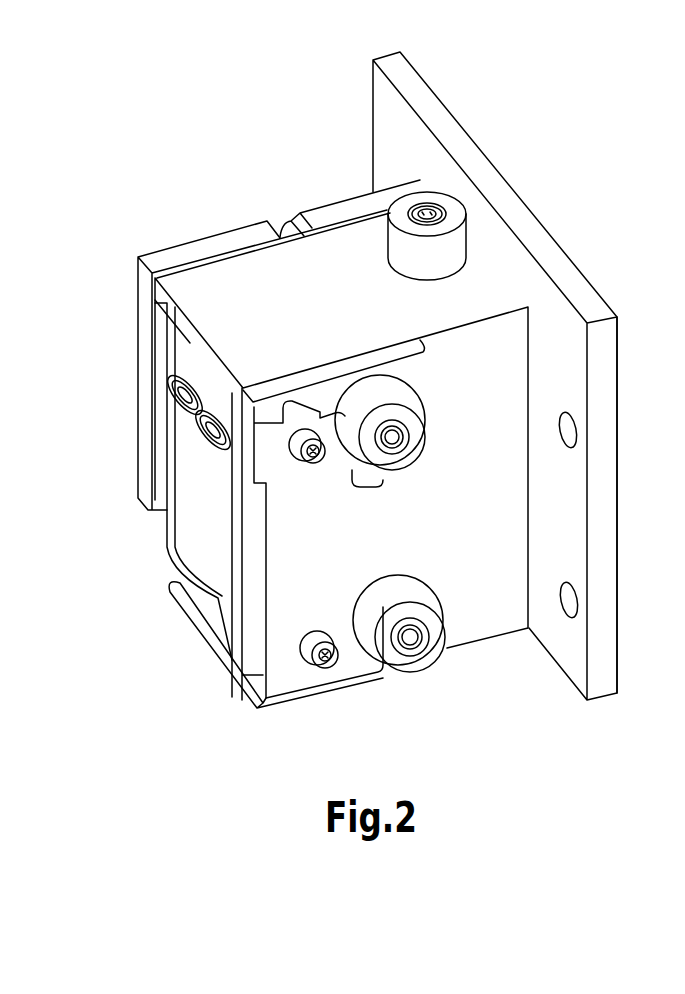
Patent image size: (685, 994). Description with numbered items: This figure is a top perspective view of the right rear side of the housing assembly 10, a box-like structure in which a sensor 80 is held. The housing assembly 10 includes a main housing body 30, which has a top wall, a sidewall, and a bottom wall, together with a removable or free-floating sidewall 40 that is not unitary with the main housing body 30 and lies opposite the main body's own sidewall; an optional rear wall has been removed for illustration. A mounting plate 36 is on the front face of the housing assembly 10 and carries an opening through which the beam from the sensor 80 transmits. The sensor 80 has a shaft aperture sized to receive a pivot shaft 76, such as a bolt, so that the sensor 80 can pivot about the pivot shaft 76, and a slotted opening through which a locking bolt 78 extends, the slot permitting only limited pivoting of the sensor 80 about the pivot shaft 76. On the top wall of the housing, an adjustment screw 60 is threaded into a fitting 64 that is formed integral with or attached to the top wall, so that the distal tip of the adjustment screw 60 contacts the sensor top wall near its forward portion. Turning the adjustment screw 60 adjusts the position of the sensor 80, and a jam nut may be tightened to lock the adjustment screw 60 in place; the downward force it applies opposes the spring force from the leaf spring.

The housing assembly 10 is at (622, 104).
The main housing body 30 is at (237, 322).
The mounting plate 36 is at (603, 555).
The free-floating sidewall 40 is at (182, 243).
The adjustment screw 60 is at (433, 203).
The fitting 64 is at (400, 248).
The pivot shaft 76 is at (413, 640).
The locking bolt 78 is at (393, 437).
The sensor 80 is at (210, 517).